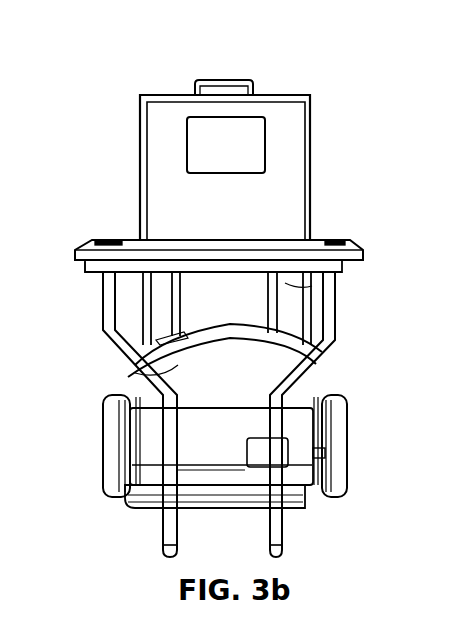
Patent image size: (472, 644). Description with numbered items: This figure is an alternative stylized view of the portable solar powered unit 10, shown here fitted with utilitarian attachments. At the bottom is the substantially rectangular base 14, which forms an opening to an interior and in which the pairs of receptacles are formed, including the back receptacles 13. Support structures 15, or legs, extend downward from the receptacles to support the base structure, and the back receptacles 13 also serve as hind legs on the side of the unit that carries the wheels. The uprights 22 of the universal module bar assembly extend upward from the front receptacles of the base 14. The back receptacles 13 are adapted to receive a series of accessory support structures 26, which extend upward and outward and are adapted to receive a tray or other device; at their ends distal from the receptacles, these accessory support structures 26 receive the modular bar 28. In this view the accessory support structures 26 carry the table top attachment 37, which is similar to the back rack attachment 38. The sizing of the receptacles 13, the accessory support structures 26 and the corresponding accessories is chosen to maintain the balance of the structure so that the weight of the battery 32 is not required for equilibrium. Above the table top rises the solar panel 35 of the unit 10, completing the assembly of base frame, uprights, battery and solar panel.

The portable solar powered unit 10 is at (116, 148).
The back receptacles 13 is at (267, 482).
The base 14 is at (135, 510).
The support structures 15 is at (270, 533).
The uprights 22 is at (268, 307).
The accessory support structures 26 is at (103, 323).
The modular bar 28 is at (312, 286).
The battery 32 is at (135, 373).
The solar panel 35 is at (297, 146).
The table top attachment 37 is at (236, 248).
The back rack attachment 38 is at (95, 262).